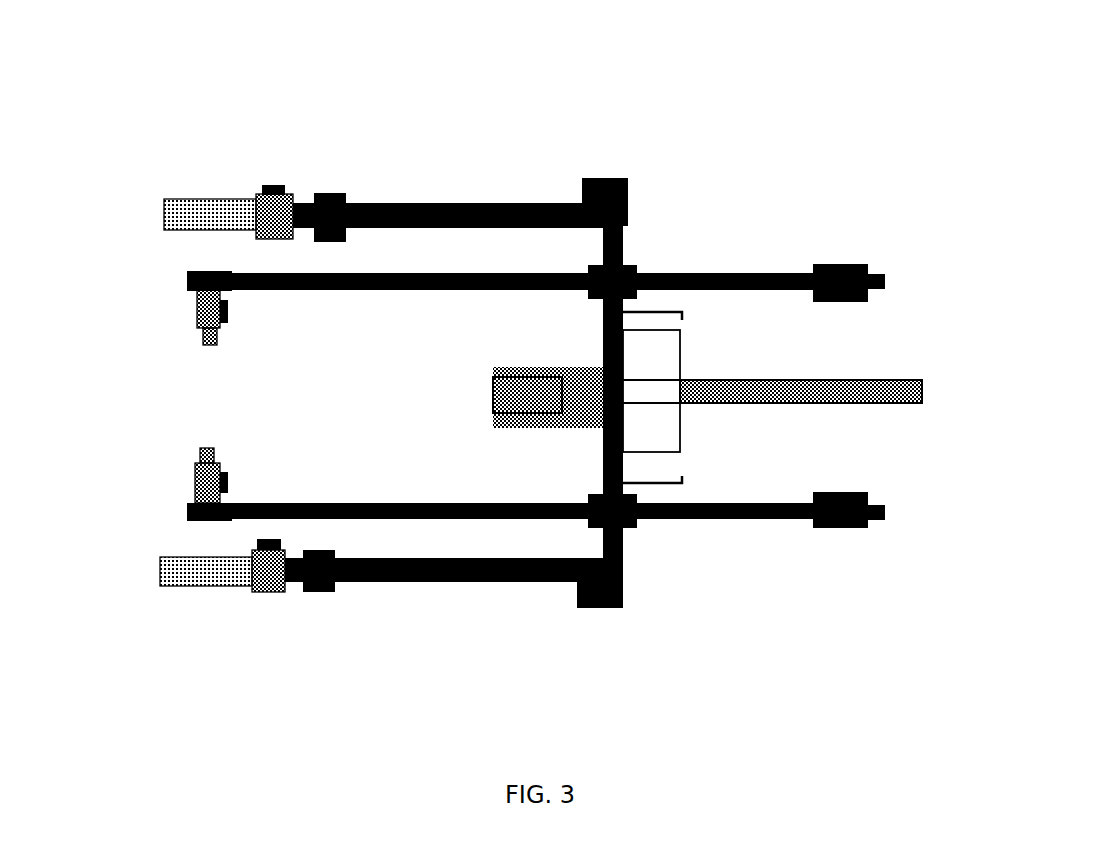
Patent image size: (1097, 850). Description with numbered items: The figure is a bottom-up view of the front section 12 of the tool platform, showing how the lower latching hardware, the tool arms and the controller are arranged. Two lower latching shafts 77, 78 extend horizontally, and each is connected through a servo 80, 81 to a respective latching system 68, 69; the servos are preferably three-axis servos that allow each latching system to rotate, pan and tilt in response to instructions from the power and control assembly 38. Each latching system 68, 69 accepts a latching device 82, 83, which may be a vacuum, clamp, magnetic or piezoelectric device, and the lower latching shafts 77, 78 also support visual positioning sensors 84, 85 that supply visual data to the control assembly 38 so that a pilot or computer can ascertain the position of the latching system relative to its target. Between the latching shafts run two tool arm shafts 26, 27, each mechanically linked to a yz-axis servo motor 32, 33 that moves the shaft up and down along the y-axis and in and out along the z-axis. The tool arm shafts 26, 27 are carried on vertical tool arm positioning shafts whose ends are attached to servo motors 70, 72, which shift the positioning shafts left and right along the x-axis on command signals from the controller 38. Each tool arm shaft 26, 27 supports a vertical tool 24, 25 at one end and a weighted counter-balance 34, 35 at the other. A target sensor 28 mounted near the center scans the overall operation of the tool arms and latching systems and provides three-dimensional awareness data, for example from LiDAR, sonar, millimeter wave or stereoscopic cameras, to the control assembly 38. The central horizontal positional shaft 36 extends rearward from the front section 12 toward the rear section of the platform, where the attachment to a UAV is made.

The front section 12 is at (777, 69).
The vertical tool 24 is at (200, 458).
The vertical tool 25 is at (190, 298).
The tool arm shaft 26 is at (320, 503).
The tool arm shaft 27 is at (347, 291).
The target sensor 28 is at (505, 382).
The yz-axis servo motor 32 is at (632, 530).
The yz-axis servo motor 33 is at (637, 242).
The weighted counter-balance 34 is at (842, 528).
The weighted counter-balance 35 is at (826, 262).
The central horizontal positional shaft 36 is at (843, 385).
The power and control assembly 38 is at (682, 358).
The latching system 68 is at (265, 593).
The latching system 69 is at (257, 237).
The servo motor 70 is at (597, 610).
The servo motor 72 is at (614, 178).
The lower latching shaft 77 is at (431, 582).
The lower latching shaft 78 is at (430, 204).
The servo 80 is at (323, 593).
The servo 81 is at (332, 192).
The latching device 82 is at (177, 575).
The latching device 83 is at (184, 206).
The visual positioning sensor 84 is at (263, 542).
The visual positioning sensor 85 is at (278, 185).